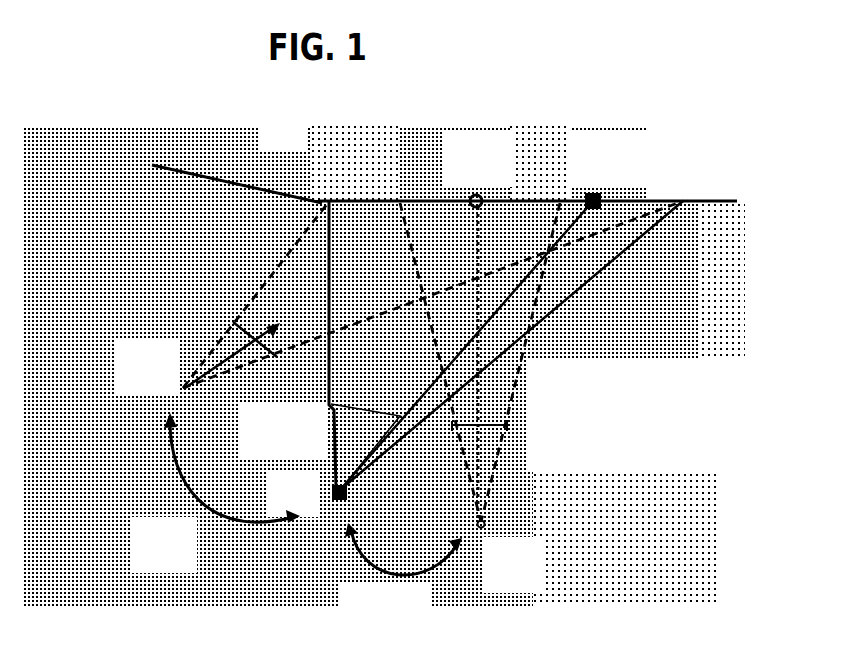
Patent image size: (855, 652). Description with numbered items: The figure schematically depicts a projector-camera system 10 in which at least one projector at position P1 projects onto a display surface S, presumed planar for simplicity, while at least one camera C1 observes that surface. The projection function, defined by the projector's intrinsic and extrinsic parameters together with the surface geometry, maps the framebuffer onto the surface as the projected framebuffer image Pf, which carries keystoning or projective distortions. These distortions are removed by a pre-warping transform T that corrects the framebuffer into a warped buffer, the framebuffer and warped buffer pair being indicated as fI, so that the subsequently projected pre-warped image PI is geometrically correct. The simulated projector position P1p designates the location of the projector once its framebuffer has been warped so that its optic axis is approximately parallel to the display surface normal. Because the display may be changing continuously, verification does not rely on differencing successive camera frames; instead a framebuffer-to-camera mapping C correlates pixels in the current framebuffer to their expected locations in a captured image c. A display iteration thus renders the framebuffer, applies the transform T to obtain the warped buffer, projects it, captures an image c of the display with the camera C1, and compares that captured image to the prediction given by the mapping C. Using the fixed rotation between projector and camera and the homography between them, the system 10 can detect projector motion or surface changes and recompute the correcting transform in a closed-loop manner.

The projector-camera system 10 is at (692, 80).
The captured image c is at (382, 198).
The display surface S is at (714, 188).
The projected pre-warped image P(Î) PI is at (476, 174).
The image of framebuffer under projection P(f) Pf is at (607, 175).
The camera C1 is at (405, 297).
The projector P1 is at (480, 358).
The framebuffer f and pre-warped framebuffer Î fI is at (377, 434).
The simulated projector position P1p is at (480, 396).
The framebuffer-to-camera mapping C is at (225, 488).
The pre-warping transform T is at (403, 580).